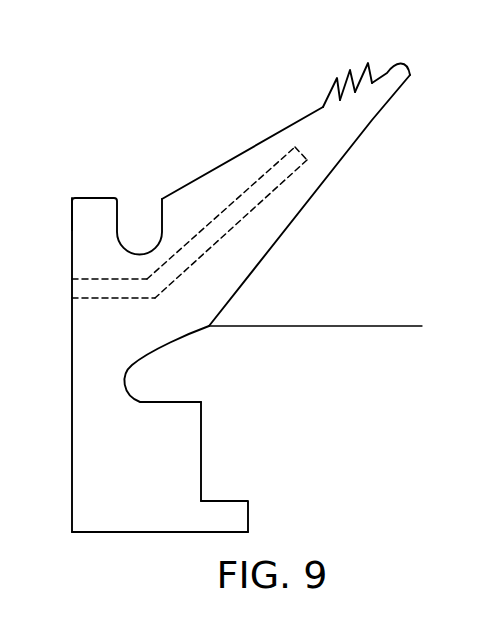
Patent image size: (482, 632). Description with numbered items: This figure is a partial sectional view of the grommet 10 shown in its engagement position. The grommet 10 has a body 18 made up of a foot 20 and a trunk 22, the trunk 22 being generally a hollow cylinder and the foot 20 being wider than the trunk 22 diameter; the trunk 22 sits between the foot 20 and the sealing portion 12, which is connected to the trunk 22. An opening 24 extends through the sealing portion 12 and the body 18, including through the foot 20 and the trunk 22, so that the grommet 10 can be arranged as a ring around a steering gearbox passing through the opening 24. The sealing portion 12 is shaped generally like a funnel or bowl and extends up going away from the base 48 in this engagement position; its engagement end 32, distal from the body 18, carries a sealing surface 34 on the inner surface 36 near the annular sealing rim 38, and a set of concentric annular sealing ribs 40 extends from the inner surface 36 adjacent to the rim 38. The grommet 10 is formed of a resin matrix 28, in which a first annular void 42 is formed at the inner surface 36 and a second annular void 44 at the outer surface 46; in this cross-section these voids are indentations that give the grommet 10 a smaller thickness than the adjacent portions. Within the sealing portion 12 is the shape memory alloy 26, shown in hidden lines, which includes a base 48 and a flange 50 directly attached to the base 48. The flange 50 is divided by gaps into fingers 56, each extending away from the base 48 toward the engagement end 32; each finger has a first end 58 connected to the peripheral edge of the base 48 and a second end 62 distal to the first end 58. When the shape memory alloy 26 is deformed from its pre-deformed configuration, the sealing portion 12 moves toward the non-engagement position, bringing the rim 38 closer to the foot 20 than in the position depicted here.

The grommet 10 is at (104, 120).
The sealing portion 12 is at (433, 63).
The body 18 is at (257, 326).
The foot 20 is at (213, 529).
The trunk 22 is at (190, 482).
The opening 24 is at (50, 206).
The shape memory alloy 26 is at (249, 184).
The resin matrix 28 is at (332, 145).
The engagement end 32 is at (356, 110).
The sealing surface 34 is at (305, 76).
The inner surface 36 is at (267, 124).
The annular sealing rim 38 is at (410, 67).
The concentric annular sealing ribs 40 is at (320, 82).
The first annular void 42 is at (140, 210).
The second annular void 44 is at (180, 366).
The outer surface 46 is at (213, 452).
The base 48 is at (110, 303).
The flange 50 is at (144, 194).
The fingers 56 is at (193, 239).
The first end 58 is at (183, 283).
The second end 62 is at (305, 177).